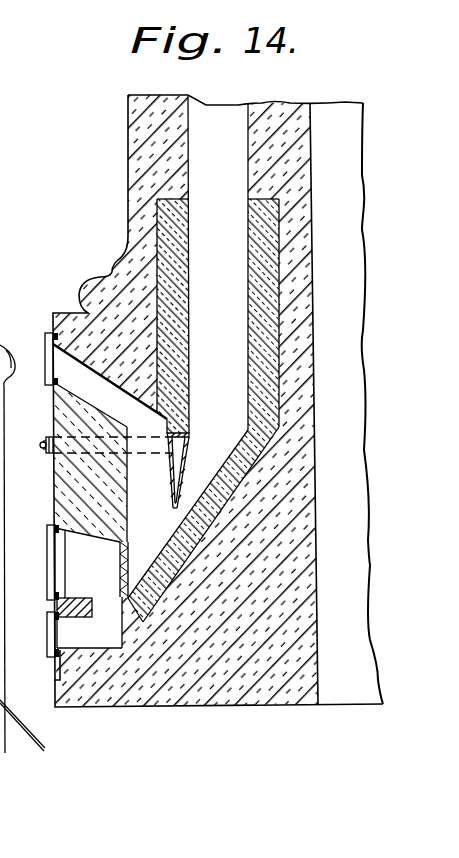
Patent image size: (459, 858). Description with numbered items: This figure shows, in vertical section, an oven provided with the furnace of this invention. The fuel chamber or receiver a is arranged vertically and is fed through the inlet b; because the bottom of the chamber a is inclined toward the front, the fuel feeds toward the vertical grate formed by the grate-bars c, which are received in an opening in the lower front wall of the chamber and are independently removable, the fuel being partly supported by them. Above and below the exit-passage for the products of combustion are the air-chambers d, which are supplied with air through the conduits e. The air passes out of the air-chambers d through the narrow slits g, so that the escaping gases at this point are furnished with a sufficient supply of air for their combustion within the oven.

The chamber a is at (139, 484).
The inlet b is at (110, 385).
The grate-bars c is at (120, 565).
The air-chambers d is at (182, 472).
The conduits e is at (106, 443).
The slits g is at (177, 505).